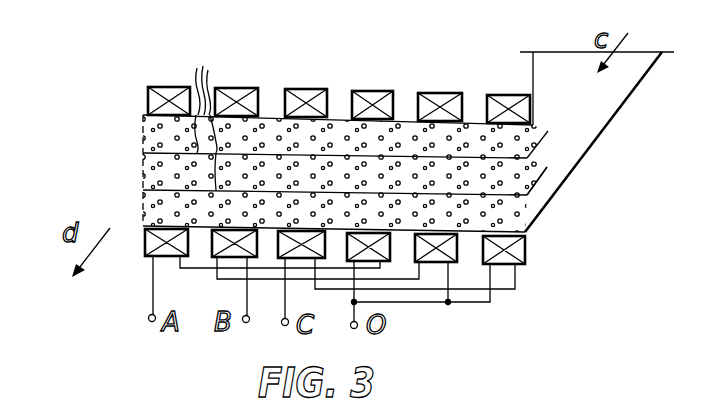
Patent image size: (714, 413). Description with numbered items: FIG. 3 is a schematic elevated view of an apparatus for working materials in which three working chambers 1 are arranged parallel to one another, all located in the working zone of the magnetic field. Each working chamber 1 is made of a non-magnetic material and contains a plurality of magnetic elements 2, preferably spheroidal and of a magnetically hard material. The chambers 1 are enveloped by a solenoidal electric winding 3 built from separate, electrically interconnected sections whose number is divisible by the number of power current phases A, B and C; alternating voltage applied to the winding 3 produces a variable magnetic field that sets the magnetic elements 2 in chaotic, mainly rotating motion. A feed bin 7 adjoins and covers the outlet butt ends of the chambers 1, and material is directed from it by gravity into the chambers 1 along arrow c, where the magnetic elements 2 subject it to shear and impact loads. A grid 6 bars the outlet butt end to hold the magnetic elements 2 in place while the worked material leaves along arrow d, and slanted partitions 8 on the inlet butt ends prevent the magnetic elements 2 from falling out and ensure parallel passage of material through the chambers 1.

The working chamber 1 is at (202, 118).
The magnetic elements 2 is at (262, 137).
The electric winding 3 is at (311, 90).
The grid 6 is at (143, 170).
The feed bin 7 is at (597, 140).
The slanted partitions 8 is at (548, 190).